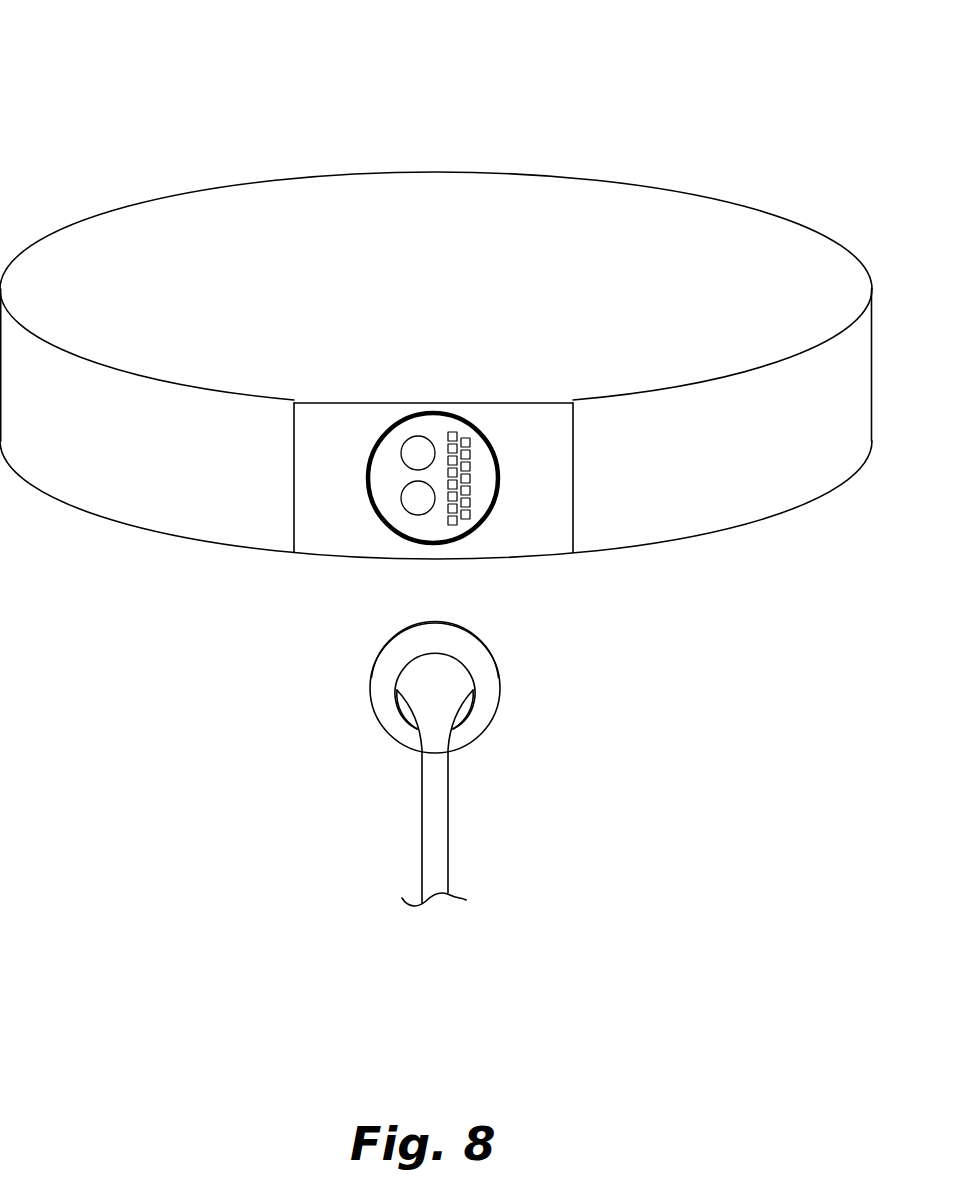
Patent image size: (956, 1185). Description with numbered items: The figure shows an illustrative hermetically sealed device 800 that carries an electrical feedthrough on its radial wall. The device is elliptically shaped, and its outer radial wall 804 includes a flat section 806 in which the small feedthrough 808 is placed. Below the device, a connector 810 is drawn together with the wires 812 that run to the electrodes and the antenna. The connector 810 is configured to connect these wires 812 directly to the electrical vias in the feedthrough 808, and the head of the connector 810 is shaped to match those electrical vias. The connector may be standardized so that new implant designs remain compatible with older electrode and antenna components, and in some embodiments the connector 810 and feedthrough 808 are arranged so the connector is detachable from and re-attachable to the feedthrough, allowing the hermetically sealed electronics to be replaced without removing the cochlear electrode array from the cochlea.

The hermetically sealed device 800 is at (124, 104).
The radial wall 804 is at (193, 466).
The flat section 806 is at (553, 458).
The feedthrough 808 is at (366, 478).
The connector 810 is at (500, 673).
The wires 812 is at (433, 817).